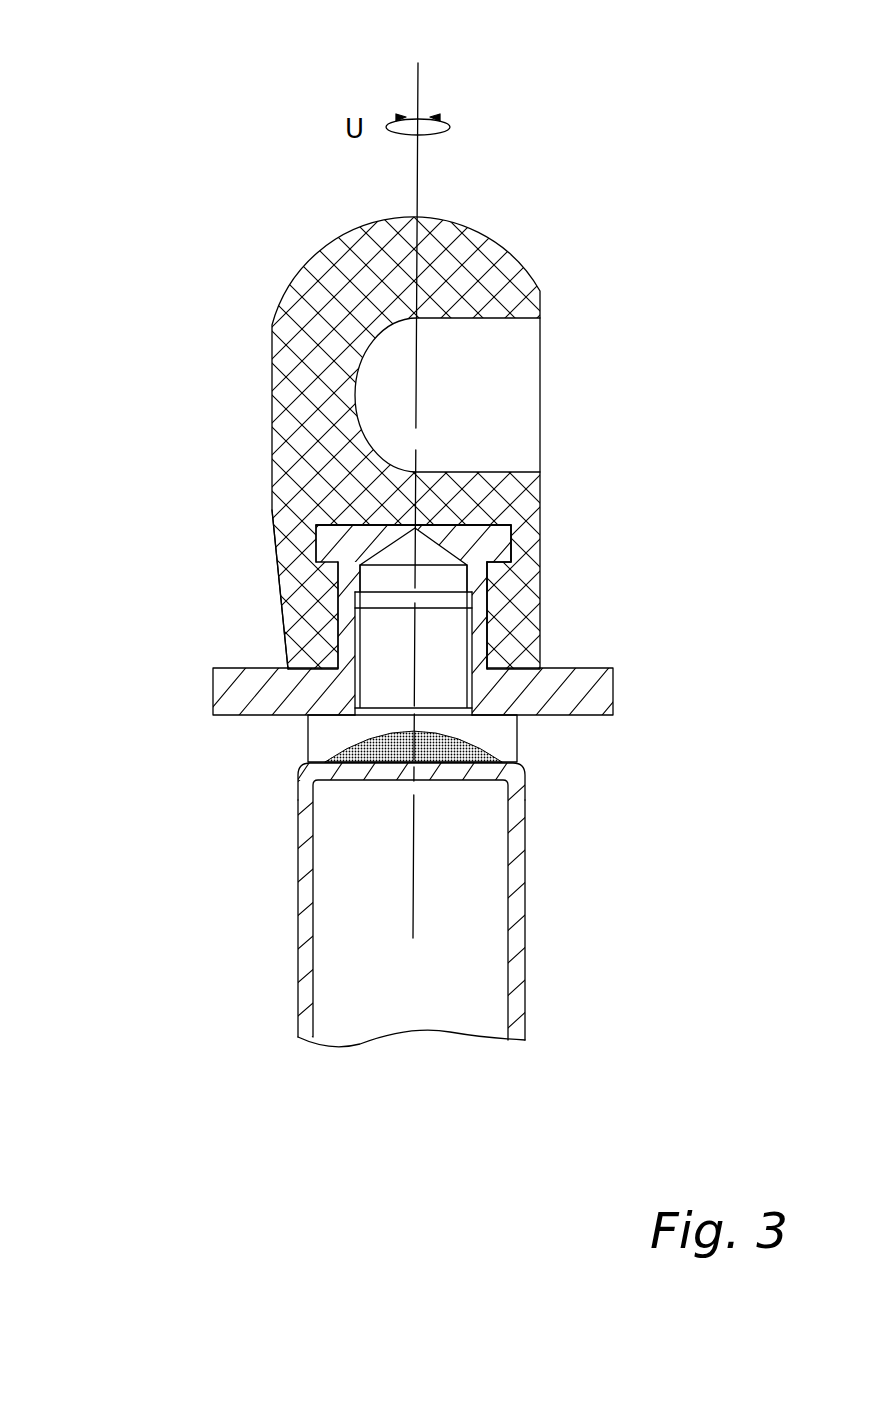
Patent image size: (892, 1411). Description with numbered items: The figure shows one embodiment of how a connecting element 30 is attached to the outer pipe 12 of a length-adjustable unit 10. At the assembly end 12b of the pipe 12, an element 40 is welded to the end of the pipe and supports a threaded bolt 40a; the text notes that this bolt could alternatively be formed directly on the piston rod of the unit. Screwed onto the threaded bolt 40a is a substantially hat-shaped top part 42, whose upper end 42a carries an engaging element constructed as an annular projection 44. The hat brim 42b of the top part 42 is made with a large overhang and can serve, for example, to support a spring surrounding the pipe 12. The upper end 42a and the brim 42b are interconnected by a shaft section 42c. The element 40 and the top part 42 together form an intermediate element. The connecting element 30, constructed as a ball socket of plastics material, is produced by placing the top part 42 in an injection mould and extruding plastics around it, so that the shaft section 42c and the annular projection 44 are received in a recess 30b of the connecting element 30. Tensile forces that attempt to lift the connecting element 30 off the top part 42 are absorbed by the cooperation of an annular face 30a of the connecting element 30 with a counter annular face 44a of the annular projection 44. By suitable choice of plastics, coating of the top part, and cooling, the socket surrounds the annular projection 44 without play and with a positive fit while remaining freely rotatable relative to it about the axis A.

The length-adjustable unit 10 is at (682, 117).
The outer pipe 12 is at (410, 909).
The assembly end 12b is at (300, 788).
The connecting element 30 is at (520, 278).
The annular face 30a is at (512, 543).
The recess 30b is at (340, 650).
The element 40 is at (500, 744).
The threaded bolt 40a is at (443, 655).
The hat-shaped top part 42 is at (433, 644).
The upper end 42a is at (513, 520).
The hat brim 42b is at (223, 705).
The shaft section 42c is at (345, 611).
The annular projection 44 is at (313, 540).
The counter annular face 44a is at (521, 584).
The axis A is at (421, 72).